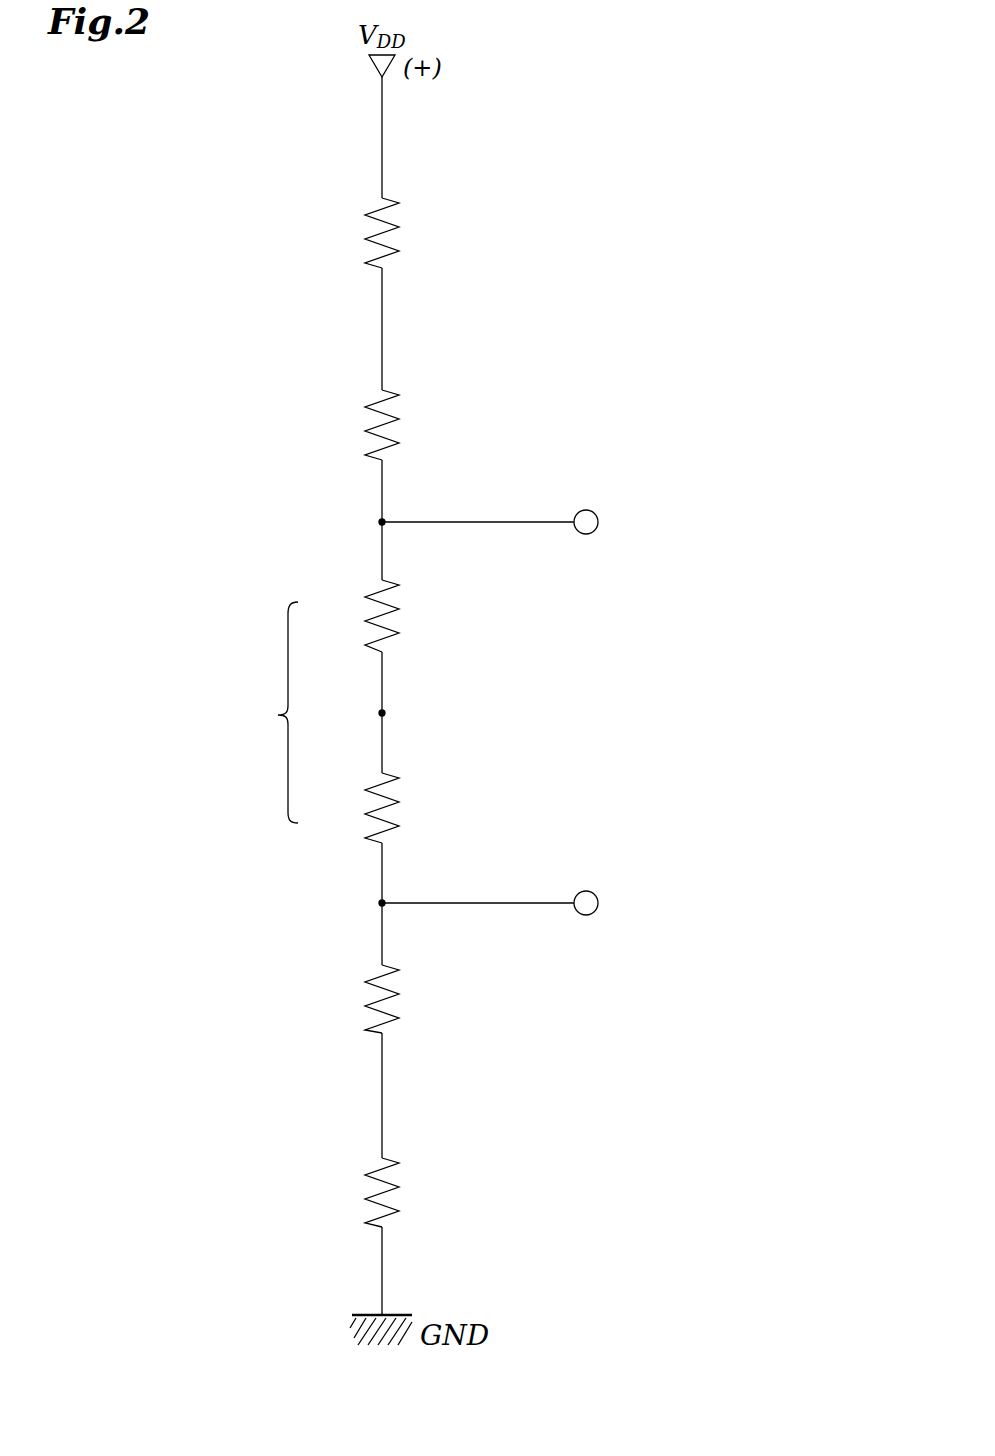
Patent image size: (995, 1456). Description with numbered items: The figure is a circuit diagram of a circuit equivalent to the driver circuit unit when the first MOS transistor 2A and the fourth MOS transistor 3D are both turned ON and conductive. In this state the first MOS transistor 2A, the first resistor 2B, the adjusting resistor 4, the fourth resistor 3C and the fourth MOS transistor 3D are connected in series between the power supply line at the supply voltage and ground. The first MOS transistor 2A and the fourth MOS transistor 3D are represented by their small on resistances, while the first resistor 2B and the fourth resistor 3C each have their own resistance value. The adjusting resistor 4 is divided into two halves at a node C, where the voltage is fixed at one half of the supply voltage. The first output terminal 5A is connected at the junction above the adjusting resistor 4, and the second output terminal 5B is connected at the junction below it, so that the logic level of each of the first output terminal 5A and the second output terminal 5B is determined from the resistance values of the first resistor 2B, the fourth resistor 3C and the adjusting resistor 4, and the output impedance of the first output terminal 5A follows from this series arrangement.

The first MOS transistor 2A is at (384, 218).
The first resistor 2B is at (384, 411).
The first output terminal 5A is at (586, 510).
The adjusting resistor 4 is at (435, 770).
The node C is at (384, 713).
The second output terminal 5B is at (587, 891).
The fourth resistor 3C is at (384, 988).
The fourth MOS transistor 3D is at (384, 1182).